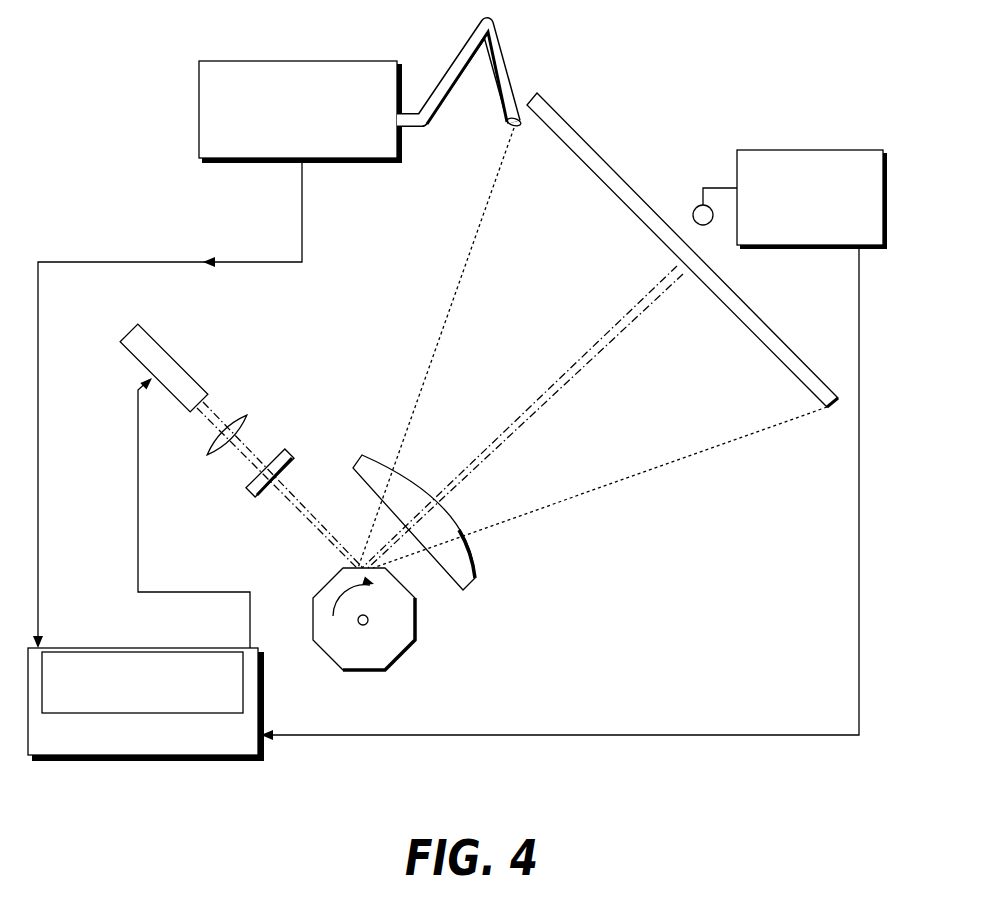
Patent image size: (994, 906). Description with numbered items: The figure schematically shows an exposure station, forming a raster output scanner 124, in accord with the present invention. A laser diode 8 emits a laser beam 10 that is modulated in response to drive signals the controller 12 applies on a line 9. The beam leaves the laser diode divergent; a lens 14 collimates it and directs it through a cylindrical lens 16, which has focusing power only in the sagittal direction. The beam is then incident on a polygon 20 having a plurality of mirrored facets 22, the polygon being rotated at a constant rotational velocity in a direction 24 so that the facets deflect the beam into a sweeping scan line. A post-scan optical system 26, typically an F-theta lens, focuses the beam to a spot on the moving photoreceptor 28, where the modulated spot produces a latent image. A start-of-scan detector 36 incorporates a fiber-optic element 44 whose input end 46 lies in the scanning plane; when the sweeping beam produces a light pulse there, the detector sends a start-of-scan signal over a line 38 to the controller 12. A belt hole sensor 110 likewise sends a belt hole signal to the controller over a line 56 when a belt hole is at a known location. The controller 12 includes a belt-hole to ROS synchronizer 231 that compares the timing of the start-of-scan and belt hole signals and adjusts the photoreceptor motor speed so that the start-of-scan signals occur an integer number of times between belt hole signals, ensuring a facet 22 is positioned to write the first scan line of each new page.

The laser diode 8 is at (160, 356).
The line 9 is at (138, 473).
The laser beam 10 is at (583, 357).
The controller 12 is at (160, 764).
The lens 14 is at (243, 421).
The cylindrical lens 16 is at (252, 486).
The polygon 20 is at (388, 650).
The mirrored facets 22 is at (414, 620).
The direction 24 is at (335, 605).
The post-scan optical system 26 is at (470, 573).
The photoreceptor 28 is at (635, 190).
The start-of-scan detector 36 is at (302, 66).
The line 38 is at (40, 306).
The fiber-optic element 44 is at (441, 72).
The input end 46 is at (507, 130).
The line 56 is at (858, 565).
The belt hole sensor 110 is at (768, 150).
The raster output scanner 124 is at (393, 394).
The belt-hole to ROS synchronizer 231 is at (125, 650).